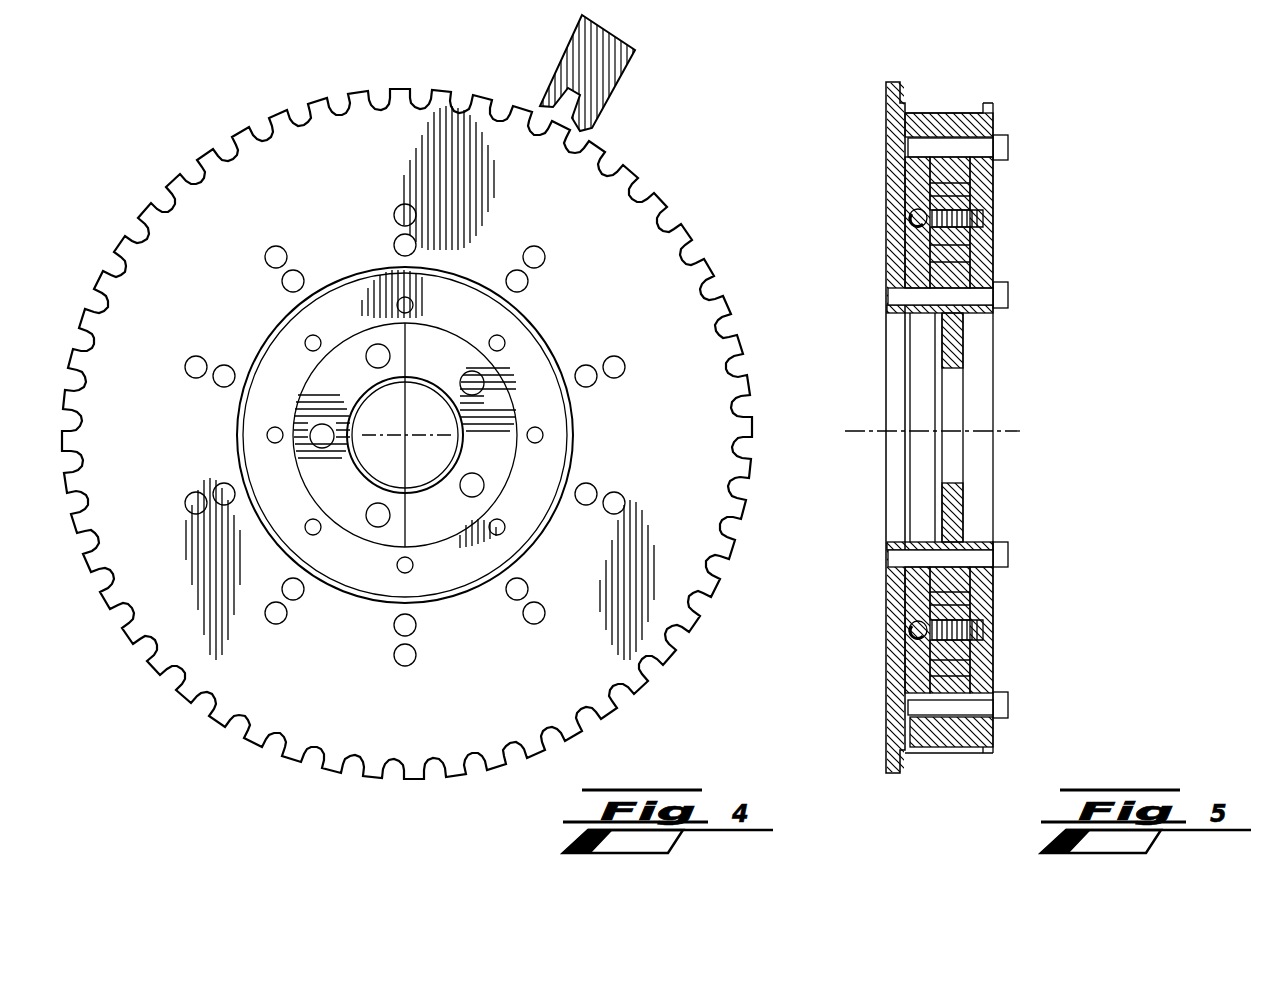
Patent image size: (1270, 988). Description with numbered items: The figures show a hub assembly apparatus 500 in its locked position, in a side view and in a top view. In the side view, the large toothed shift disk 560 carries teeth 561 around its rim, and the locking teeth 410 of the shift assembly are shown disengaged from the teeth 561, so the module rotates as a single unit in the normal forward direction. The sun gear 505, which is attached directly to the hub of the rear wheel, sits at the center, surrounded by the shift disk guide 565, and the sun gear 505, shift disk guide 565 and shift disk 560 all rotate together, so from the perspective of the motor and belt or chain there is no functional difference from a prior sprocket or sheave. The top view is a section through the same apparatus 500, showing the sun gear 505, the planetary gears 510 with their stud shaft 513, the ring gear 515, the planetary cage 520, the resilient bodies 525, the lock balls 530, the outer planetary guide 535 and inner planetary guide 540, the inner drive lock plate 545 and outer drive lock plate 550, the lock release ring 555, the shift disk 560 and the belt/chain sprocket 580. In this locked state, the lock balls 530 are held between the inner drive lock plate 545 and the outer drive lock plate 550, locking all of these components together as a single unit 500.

In FIG. 4, the locking teeth 410 is at (620, 78).
In FIG. 4, the hub assembly apparatus 500 is at (188, 124).
In FIG. 5, the hub assembly apparatus 500 is at (982, 75).
In FIG. 4, the sun gear 505 is at (300, 462).
In FIG. 5, the sun gear 505 is at (955, 563).
In FIG. 5, the planetary gears 510 is at (887, 195).
In FIG. 5, the stud shaft 513 is at (993, 600).
In FIG. 5, the ring gear 515 is at (940, 165).
In FIG. 5, the planetary cage 520 is at (993, 197).
In FIG. 5, the resilient bodies 525 is at (993, 215).
In FIG. 5, the lock balls 530 is at (887, 605).
In FIG. 5, the outer planetary guide 535 is at (993, 163).
In FIG. 5, the inner planetary guide 540 is at (993, 573).
In FIG. 5, the inner drive lock plate 545 is at (887, 245).
In FIG. 5, the outer drive lock plate 550 is at (887, 680).
In FIG. 5, the lock release ring 555 is at (887, 627).
In FIG. 4, the shift disk 560 is at (338, 193).
In FIG. 5, the shift disk 560 is at (887, 757).
In FIG. 4, the teeth 561 is at (505, 113).
In FIG. 4, the shift disk guide 565 is at (285, 345).
In FIG. 5, the shift disk guide 565 is at (887, 270).
In FIG. 5, the belt/chain sprocket 580 is at (993, 117).